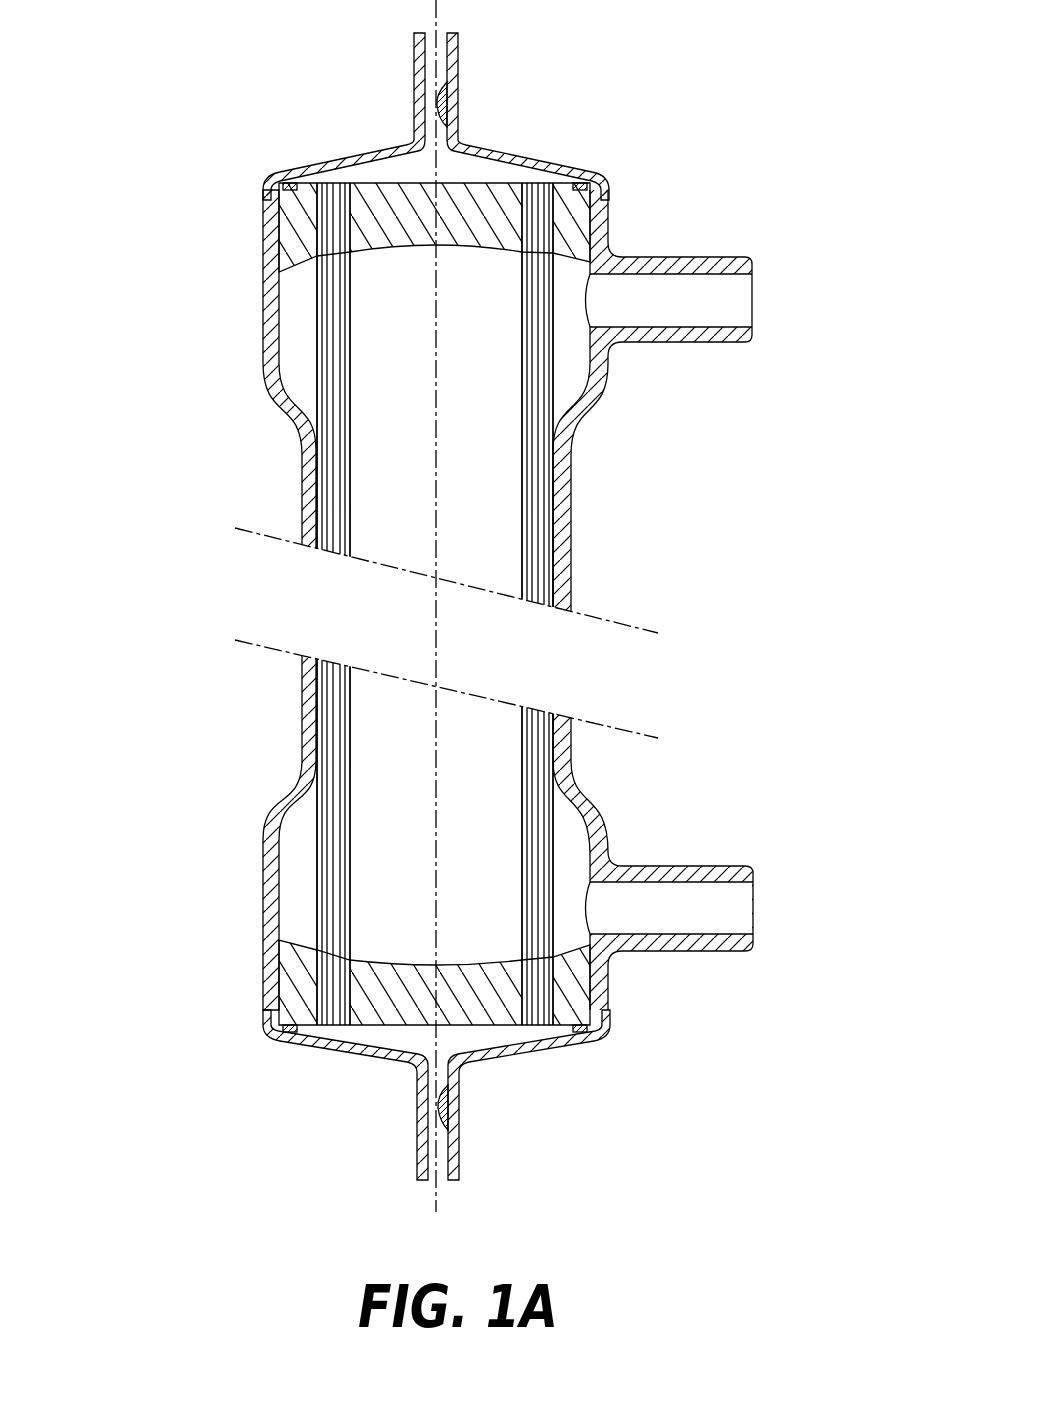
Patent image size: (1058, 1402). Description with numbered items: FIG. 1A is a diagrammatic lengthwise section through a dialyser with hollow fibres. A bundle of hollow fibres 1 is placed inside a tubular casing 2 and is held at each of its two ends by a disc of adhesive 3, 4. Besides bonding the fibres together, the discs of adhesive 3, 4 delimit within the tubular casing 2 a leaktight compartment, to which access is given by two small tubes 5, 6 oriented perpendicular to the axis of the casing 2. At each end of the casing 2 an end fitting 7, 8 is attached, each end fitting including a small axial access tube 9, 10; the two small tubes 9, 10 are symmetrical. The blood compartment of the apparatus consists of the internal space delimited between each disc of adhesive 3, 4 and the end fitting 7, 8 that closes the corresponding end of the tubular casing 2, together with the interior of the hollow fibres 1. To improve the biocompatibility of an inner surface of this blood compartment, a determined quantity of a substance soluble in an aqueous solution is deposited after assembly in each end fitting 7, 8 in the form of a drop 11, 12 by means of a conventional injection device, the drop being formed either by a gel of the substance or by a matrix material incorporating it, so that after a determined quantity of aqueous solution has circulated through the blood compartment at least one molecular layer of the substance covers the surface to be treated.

The bundle of hollow fibres 1 is at (598, 820).
The tubular casing 2 is at (575, 503).
The disc of adhesive 3 is at (492, 186).
The disc of adhesive 4 is at (497, 1022).
The small tube 5 is at (682, 262).
The small tube 6 is at (700, 942).
The end fitting 7 is at (345, 160).
The end fitting 8 is at (338, 1043).
The small axial access tube 9 is at (440, 54).
The small axial access tube 10 is at (440, 1153).
The drop 11 is at (450, 97).
The drop 12 is at (460, 1110).